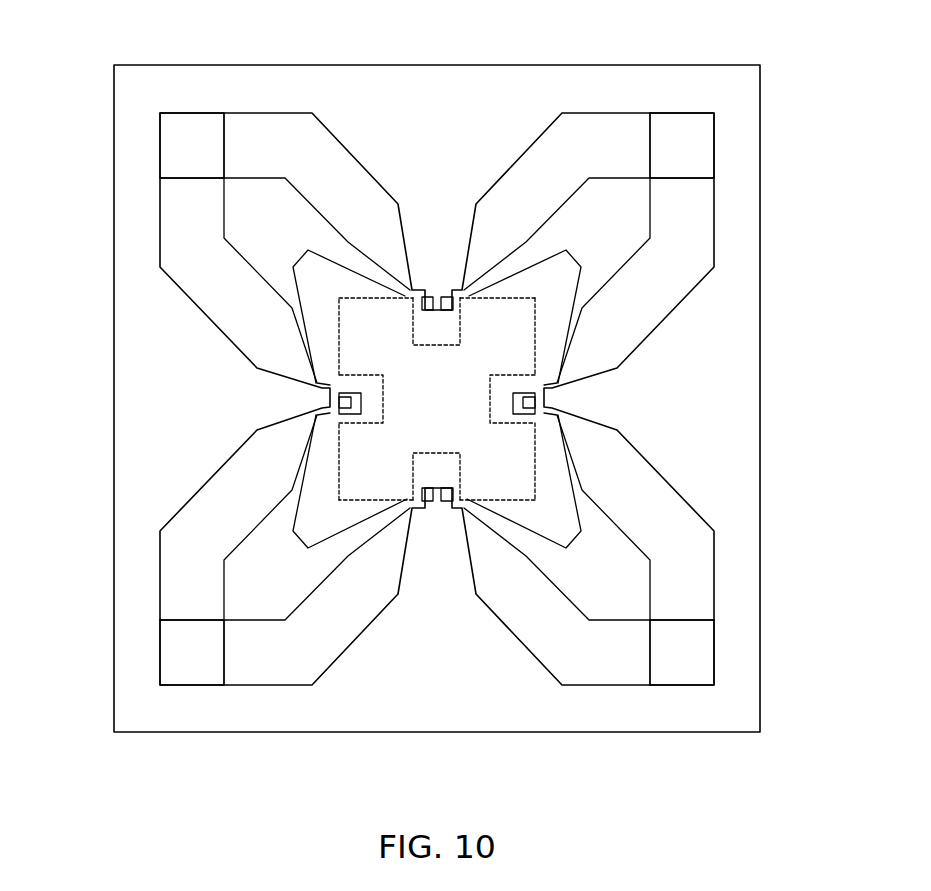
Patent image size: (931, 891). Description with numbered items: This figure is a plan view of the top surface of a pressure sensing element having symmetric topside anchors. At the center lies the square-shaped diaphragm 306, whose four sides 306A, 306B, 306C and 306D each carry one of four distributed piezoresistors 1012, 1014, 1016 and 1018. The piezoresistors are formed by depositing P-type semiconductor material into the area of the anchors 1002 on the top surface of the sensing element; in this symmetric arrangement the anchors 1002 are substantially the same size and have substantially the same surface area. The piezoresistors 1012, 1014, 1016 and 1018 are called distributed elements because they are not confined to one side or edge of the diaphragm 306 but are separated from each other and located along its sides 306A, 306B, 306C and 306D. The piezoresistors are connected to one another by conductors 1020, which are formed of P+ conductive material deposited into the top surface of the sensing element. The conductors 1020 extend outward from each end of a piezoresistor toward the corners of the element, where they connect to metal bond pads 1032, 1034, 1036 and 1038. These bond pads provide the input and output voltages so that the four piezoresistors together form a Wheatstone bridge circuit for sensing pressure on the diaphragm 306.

The diaphragm 306 is at (446, 418).
The side of the diaphragm 306A is at (537, 472).
The side of the diaphragm 306B is at (515, 297).
The side of the diaphragm 306C is at (337, 488).
The side of the diaphragm 306D is at (510, 504).
The anchors 1002 is at (415, 337).
The piezoresistor 1012 is at (546, 402).
The piezoresistor 1014 is at (430, 296).
The piezoresistor 1016 is at (326, 397).
The piezoresistor 1018 is at (437, 504).
The conductors 1020 is at (296, 127).
The metal bond pad 1032 is at (683, 663).
The metal bond pad 1034 is at (177, 156).
The metal bond pad 1036 is at (177, 662).
The metal bond pad 1038 is at (700, 133).